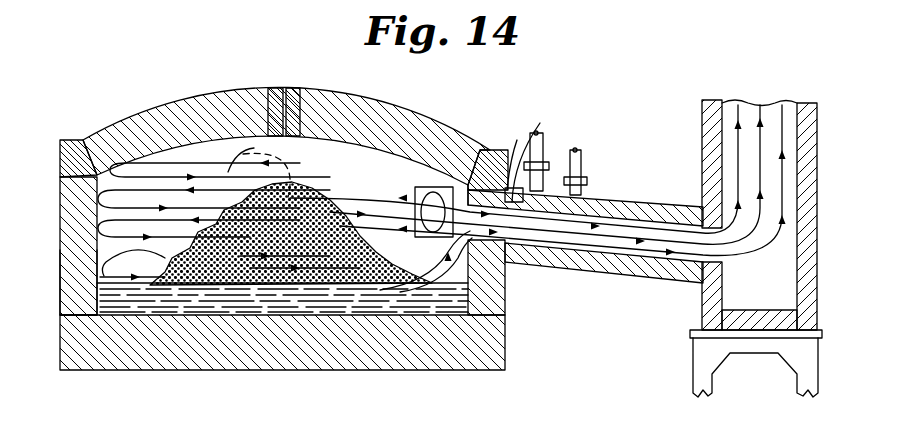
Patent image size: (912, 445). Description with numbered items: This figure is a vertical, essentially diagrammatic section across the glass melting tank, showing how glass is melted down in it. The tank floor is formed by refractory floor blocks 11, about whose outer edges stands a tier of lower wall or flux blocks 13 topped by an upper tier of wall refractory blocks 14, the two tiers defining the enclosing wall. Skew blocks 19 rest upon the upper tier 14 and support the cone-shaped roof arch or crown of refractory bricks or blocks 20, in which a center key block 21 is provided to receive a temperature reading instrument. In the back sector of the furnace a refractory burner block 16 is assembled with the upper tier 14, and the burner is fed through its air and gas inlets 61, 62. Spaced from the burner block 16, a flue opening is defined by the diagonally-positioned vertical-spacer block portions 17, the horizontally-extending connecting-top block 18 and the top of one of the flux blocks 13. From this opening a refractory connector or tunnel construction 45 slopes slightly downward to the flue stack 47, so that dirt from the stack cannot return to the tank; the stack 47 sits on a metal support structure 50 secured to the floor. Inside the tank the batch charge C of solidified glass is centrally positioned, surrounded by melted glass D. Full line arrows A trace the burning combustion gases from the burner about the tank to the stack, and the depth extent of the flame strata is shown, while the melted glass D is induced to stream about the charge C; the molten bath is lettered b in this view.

The refractory floor blocks 11 is at (505, 349).
The lower wall or flux blocks 13 is at (78, 268).
The upper tier of wall refractory blocks 14 is at (78, 206).
The refractory burner block 16 is at (420, 187).
The vertical-spacer block portions 17 is at (536, 152).
The connecting-top block 18 is at (511, 156).
The skew blocks 19 is at (95, 158).
The refractory bricks or blocks of roof arch 20 is at (340, 108).
The center key block 21 is at (284, 92).
The refractory connector or tunnel construction 45 is at (639, 206).
The flue stack 47 is at (703, 113).
The metal support structure 50 is at (700, 354).
The air inlet 61 is at (542, 136).
The gas inlet 62 is at (579, 153).
The full line arrows A is at (259, 169).
The batch charge C is at (306, 186).
The melted glass D is at (132, 265).
The molten bath b is at (197, 307).